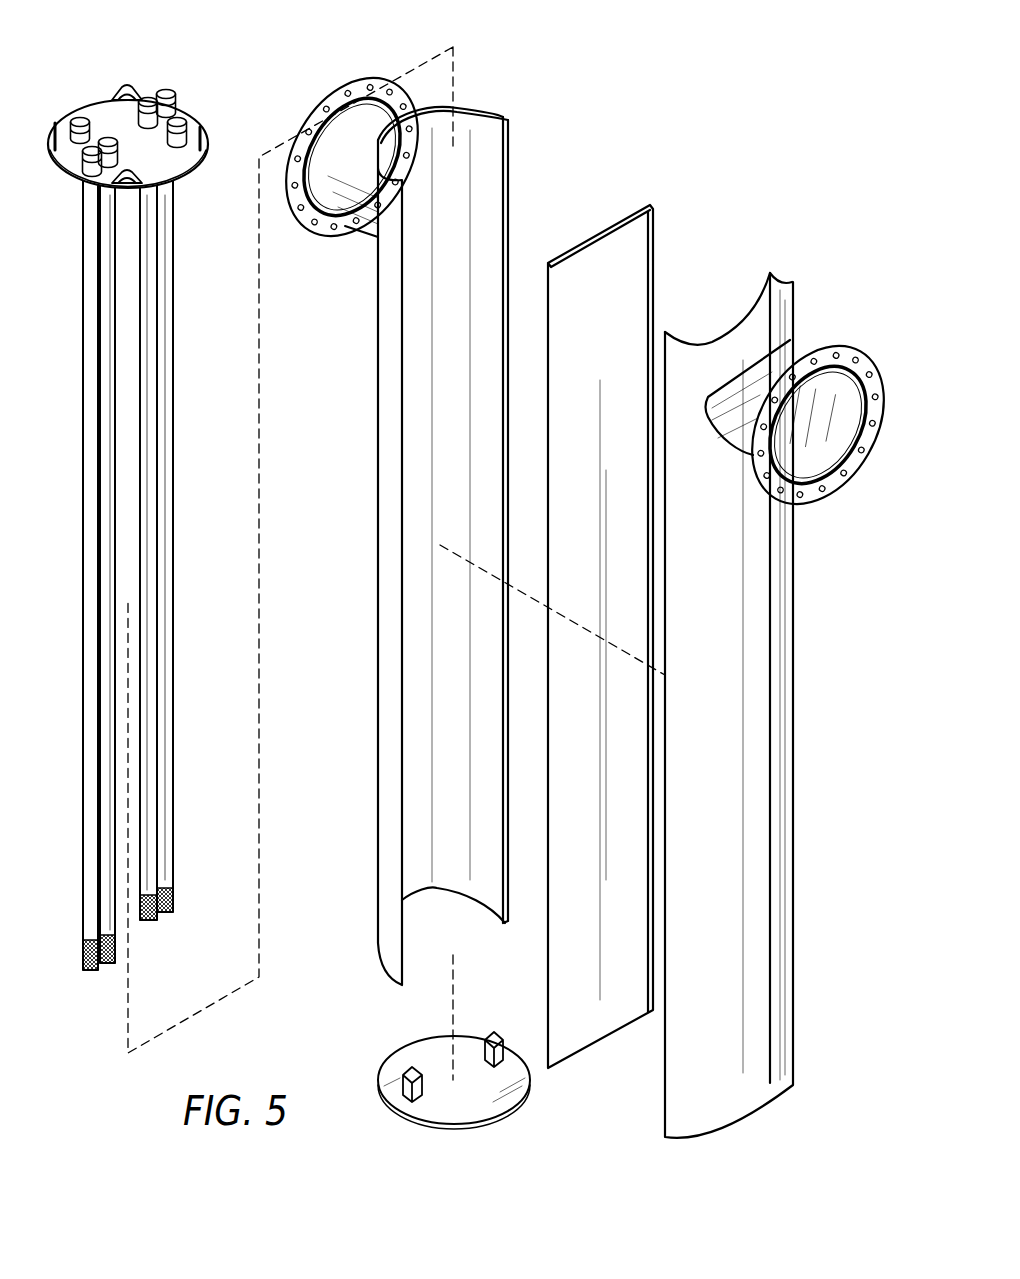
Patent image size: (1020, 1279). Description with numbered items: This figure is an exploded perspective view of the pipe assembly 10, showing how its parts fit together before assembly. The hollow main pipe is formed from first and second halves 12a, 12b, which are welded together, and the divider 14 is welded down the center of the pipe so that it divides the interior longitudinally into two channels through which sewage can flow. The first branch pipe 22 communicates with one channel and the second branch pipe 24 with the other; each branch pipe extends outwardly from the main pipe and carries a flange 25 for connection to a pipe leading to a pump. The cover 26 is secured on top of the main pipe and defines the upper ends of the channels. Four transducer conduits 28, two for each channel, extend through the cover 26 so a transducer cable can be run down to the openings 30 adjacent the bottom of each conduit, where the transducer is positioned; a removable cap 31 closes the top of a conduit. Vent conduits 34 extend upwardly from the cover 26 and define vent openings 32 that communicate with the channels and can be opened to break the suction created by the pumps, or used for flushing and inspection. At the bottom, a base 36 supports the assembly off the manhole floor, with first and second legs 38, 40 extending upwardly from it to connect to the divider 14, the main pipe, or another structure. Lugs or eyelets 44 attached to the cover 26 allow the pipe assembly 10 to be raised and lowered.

The pipe assembly 10 is at (637, 100).
The first half of the main pipe 12a is at (500, 134).
The second half of the main pipe 12b is at (768, 742).
The divider 14 is at (643, 225).
The first branch pipe 22 is at (341, 150).
The second branch pipe 24 is at (797, 357).
The flange 25 is at (353, 80).
The cover 26 is at (98, 112).
The transducer conduits 28 is at (93, 178).
The openings 30 is at (109, 958).
The removable cap 31 is at (164, 90).
The vent opening 32 is at (63, 118).
The vent conduits 34 is at (190, 122).
The base 36 is at (497, 1107).
The first leg 38 is at (403, 1088).
The second leg 40 is at (502, 1053).
The lugs or eyelets 44 is at (128, 85).